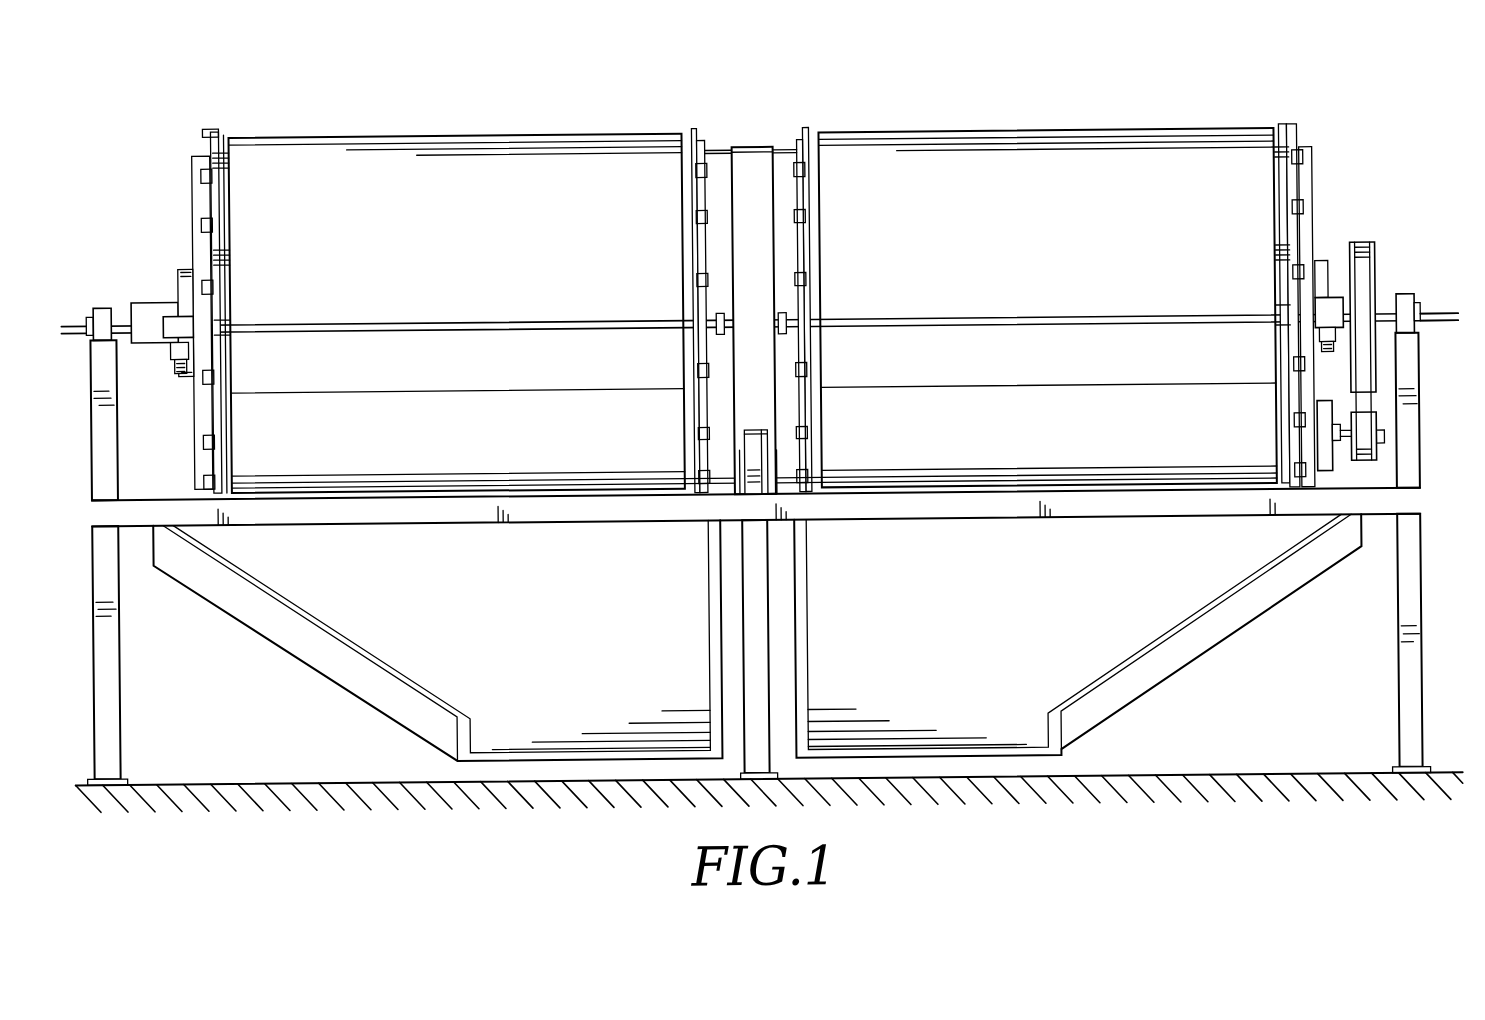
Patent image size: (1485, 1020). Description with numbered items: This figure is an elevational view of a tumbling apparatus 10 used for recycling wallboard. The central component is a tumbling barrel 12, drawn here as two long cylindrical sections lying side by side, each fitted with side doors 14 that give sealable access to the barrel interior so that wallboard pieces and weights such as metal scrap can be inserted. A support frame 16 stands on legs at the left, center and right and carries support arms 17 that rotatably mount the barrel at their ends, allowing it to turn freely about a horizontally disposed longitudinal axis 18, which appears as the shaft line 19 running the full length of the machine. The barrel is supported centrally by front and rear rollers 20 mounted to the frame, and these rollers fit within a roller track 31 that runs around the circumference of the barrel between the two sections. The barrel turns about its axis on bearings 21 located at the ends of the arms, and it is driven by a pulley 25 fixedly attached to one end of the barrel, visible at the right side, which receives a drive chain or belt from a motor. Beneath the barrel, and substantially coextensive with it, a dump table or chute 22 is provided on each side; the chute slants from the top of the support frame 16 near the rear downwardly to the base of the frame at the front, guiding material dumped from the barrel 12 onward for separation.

The apparatus 10 is at (957, 110).
The tumbling barrel 12 is at (1260, 194).
The side doors 14 is at (549, 152).
The support frame 16 is at (119, 641).
The support arms 17 is at (118, 397).
The longitudinal axis 18 is at (1437, 317).
The drive shaft 19 is at (543, 318).
The front and rear rollers 20 is at (758, 432).
The bearings 21 is at (107, 301).
The dump table or chute 22 is at (358, 689).
The pulley 25 is at (1380, 261).
The roller track 31 is at (767, 147).